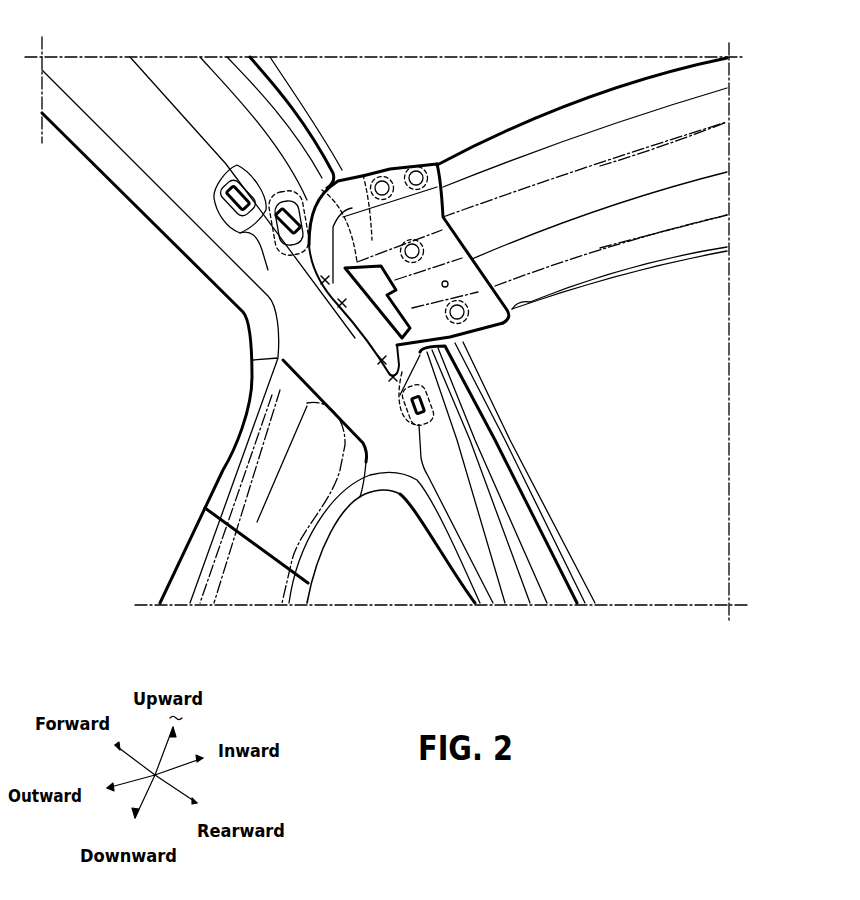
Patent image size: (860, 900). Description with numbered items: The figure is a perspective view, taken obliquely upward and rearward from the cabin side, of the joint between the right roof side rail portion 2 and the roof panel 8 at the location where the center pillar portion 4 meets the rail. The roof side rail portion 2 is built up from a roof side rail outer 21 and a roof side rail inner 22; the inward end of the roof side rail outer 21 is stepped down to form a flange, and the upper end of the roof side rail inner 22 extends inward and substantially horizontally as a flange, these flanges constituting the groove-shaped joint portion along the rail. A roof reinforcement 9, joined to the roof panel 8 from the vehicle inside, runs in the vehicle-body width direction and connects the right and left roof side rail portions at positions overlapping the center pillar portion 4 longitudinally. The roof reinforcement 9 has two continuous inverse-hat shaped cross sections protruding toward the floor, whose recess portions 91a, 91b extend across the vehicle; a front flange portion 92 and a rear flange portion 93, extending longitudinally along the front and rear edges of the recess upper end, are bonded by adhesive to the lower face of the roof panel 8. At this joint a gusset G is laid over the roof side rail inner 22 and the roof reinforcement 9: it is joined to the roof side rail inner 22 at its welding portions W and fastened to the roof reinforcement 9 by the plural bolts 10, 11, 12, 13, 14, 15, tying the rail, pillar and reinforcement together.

The roof side rail portion 2 is at (110, 78).
The center pillar portion 4 is at (217, 468).
The roof panel 8 is at (410, 66).
The roof reinforcement 9 is at (672, 66).
The bolt 10 is at (362, 192).
The bolt 11 is at (417, 166).
The bolt 12 is at (478, 352).
The bolt 13 is at (507, 333).
The bolt 14 is at (455, 231).
The bolt 15 is at (497, 298).
The roof side rail outer 21 is at (92, 165).
The roof side rail inner 22 is at (175, 182).
The recess portion 91a is at (718, 147).
The recess portion 91b is at (718, 232).
The front flange portion 92 is at (573, 117).
The rear flange portion 93 is at (550, 308).
The gusset G is at (378, 163).
The welding portion W is at (282, 357).